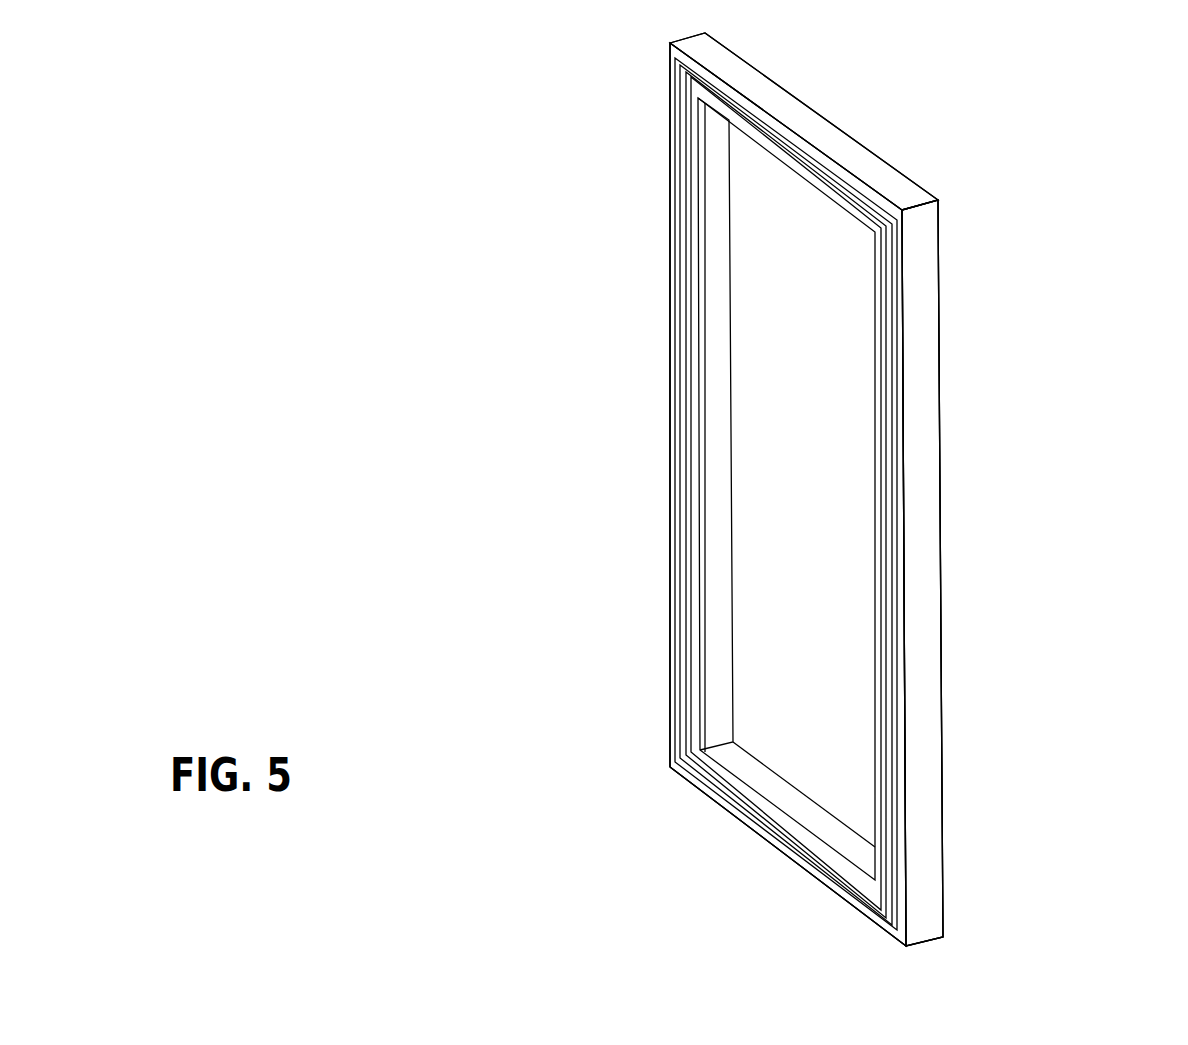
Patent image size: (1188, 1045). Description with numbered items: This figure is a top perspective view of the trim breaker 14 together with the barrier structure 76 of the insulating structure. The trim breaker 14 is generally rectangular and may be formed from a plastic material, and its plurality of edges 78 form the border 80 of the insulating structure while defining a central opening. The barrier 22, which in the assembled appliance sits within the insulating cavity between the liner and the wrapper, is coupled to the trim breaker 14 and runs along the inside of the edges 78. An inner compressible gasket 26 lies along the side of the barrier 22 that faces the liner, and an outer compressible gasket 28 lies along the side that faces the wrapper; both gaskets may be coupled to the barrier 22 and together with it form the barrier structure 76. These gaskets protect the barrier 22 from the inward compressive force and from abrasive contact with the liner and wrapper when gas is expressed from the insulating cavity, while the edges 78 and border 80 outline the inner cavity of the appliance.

The trim breaker 14 is at (836, 148).
The barrier 22 is at (853, 206).
The inner compressible gasket 26 is at (689, 133).
The outer compressible gasket 28 is at (703, 80).
The barrier structure 76 is at (898, 196).
The plurality of edges 78 is at (656, 425).
The border 80 is at (1046, 423).